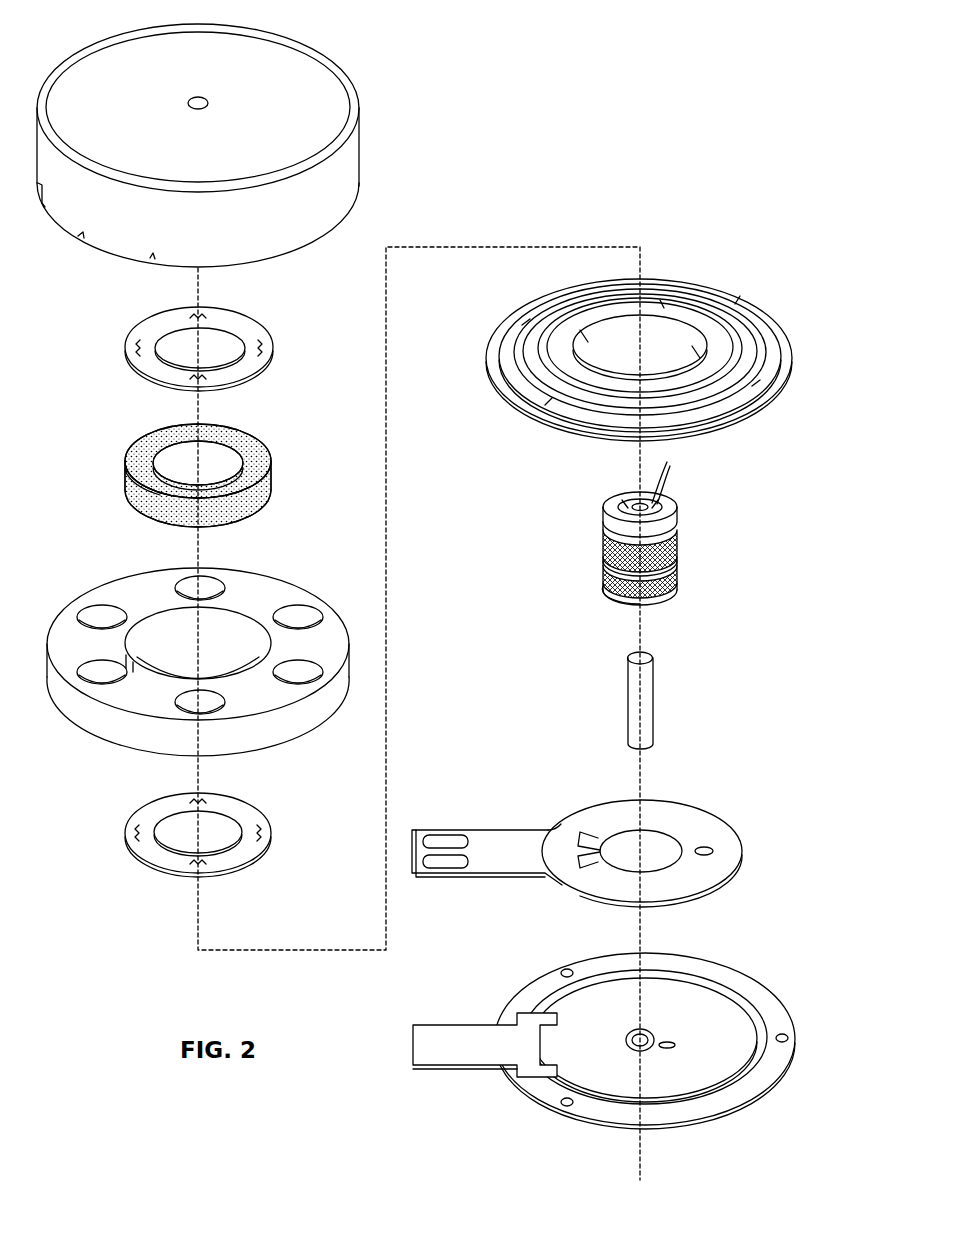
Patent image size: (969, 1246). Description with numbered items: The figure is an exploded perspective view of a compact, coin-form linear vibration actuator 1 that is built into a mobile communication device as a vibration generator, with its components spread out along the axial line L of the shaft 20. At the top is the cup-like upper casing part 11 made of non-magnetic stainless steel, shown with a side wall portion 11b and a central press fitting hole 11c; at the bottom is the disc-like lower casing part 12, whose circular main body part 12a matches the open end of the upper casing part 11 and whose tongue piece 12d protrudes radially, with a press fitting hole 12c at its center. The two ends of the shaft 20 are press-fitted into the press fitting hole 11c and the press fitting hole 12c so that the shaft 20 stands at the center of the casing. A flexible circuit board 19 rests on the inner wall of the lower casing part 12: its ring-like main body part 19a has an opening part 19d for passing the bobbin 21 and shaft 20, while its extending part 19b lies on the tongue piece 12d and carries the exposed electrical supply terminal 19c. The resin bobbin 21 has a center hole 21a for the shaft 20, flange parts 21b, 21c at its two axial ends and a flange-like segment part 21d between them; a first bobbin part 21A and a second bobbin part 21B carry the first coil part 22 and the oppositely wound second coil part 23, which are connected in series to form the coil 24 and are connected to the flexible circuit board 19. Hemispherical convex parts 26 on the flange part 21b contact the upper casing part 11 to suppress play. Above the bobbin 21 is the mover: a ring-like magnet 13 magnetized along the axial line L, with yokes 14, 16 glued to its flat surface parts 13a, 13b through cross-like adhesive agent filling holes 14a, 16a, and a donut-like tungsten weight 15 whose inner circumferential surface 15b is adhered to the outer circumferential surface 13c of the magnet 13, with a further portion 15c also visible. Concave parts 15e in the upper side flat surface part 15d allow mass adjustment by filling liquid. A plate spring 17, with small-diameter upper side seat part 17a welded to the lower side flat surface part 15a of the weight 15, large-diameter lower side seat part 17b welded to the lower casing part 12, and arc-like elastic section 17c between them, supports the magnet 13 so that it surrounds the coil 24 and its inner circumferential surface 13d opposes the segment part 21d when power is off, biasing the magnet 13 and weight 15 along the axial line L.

The linear vibration actuator 1 is at (611, 74).
The upper casing part 11 is at (243, 138).
The housing side wall 11b is at (361, 142).
The press fitting hole 11c is at (190, 97).
The lower casing part 12 is at (607, 1039).
The main body part 12a is at (732, 1110).
The press fitting hole 12c is at (651, 1036).
The tongue piece 12d is at (460, 1038).
The magnet 13 is at (203, 468).
The flat surface part 13a is at (268, 462).
The flat surface part 13b is at (245, 520).
The outer circumferential surface 13c is at (140, 511).
The inner circumferential surface 13d is at (170, 440).
The yoke 14 is at (200, 336).
The adhesive agent filling holes 14a is at (134, 348).
The weight 15 is at (192, 687).
The lower side flat surface part 15a is at (70, 720).
The inner circumferential surface 15b is at (158, 632).
The flange side surface 15c is at (300, 718).
The upper side flat surface part 15d is at (72, 642).
The concave parts 15e is at (300, 617).
The yoke 16 is at (222, 835).
The adhesive agent filling holes 16a is at (148, 830).
The plate spring 17 is at (650, 346).
The upper side seat part 17a is at (668, 312).
The lower side seat part 17b is at (741, 405).
The elastic section 17c is at (745, 320).
The flexible circuit board 19 is at (594, 820).
The main body part 19a is at (613, 815).
The extending part 19b is at (520, 842).
The electrical supply terminal 19c is at (452, 857).
The opening part 19d is at (661, 853).
The shaft 20 is at (651, 700).
The bobbin 21 is at (621, 541).
The first bobbin part 21A is at (682, 505).
The second bobbin part 21B is at (682, 588).
The center hole 21a is at (626, 498).
The flange part 21b is at (600, 513).
The flange part 21c is at (608, 592).
The segment part 21d is at (604, 561).
The first coil part 22 is at (604, 541).
The second coil part 23 is at (604, 575).
The coil 24 is at (552, 560).
The convex parts 26 is at (675, 476).
The axial line L is at (388, 679).